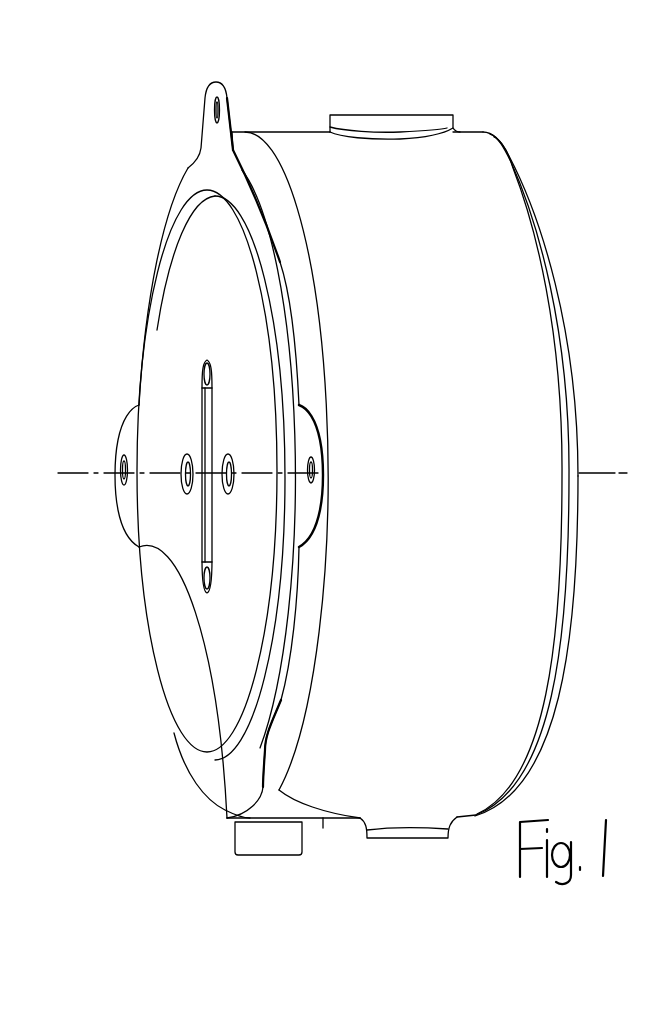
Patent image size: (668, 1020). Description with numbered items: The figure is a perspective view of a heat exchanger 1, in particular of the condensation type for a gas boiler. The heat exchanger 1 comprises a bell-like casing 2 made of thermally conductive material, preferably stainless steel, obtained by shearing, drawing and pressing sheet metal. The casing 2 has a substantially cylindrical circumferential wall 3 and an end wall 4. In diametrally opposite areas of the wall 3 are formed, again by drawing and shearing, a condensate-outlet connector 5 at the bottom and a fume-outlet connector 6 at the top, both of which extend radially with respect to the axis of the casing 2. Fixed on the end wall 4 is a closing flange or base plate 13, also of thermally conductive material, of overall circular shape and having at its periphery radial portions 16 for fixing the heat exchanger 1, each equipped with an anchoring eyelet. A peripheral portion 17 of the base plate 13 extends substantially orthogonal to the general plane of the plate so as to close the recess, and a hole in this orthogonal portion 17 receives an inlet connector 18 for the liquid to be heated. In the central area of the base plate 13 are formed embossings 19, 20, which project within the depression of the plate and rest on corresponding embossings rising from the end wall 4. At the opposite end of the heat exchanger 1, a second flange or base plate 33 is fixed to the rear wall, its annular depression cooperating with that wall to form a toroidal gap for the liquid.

The heat exchanger 1 is at (567, 156).
The bell-like casing 2 is at (303, 128).
The circumferential wall 3 is at (532, 310).
The end wall 4 is at (243, 143).
The condensate-outlet connector 5 is at (420, 840).
The fume-outlet connector 6 is at (404, 126).
The base plate 13 is at (153, 719).
The radial portions 16 is at (228, 112).
The peripheral portion 17 is at (323, 816).
The inlet connector 18 is at (243, 846).
The embossing 19 is at (183, 465).
The embossing 20 is at (210, 426).
The second base plate 33 is at (574, 592).